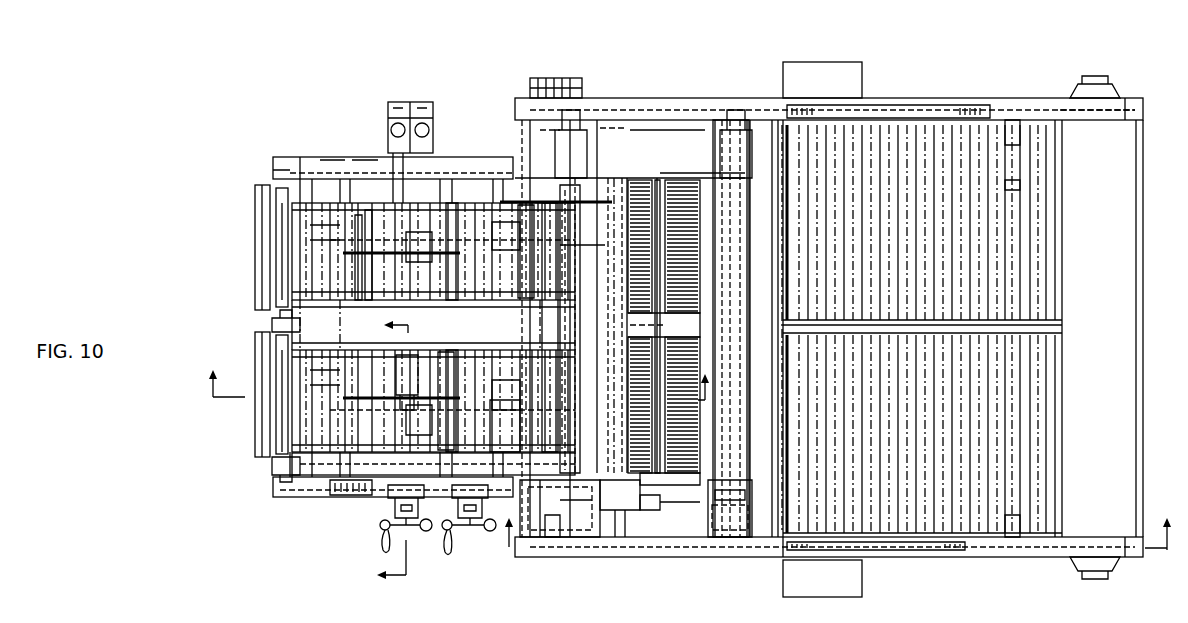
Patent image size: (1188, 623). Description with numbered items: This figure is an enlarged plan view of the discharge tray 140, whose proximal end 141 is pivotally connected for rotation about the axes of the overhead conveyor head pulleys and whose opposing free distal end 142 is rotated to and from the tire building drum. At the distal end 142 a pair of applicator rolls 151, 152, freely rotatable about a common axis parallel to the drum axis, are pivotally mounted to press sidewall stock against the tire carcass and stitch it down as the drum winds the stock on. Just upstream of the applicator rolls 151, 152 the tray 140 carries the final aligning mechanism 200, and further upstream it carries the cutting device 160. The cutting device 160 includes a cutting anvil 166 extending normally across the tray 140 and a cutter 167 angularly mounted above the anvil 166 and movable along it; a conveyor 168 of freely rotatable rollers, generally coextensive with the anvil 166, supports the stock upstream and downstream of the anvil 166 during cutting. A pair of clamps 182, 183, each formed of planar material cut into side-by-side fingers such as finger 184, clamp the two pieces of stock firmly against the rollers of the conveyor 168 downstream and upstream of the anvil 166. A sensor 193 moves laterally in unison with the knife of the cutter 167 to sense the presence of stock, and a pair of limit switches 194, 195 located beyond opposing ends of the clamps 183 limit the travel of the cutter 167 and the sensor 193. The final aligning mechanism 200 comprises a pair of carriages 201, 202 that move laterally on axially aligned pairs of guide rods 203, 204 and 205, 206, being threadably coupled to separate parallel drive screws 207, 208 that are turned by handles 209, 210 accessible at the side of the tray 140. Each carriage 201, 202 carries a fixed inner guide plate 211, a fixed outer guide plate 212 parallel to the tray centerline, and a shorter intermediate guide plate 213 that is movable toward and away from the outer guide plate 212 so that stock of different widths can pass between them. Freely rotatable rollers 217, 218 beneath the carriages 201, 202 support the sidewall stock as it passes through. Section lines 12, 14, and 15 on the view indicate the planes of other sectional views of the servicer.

The section line 12 is at (833, 522).
The section line 14 is at (460, 373).
The section line 15 is at (380, 451).
The discharge tray 140 is at (645, 97).
The proximal end 141 is at (1143, 551).
The free distal end 142 is at (290, 490).
The applicator roll 151 is at (255, 432).
The applicator roll 152 is at (254, 230).
The cutting device 160 is at (558, 547).
The cutting anvil 166 is at (667, 473).
The cutter 167 is at (666, 462).
The conveyor 168 is at (973, 540).
The clamp 182 is at (628, 178).
The clamp 183 is at (700, 197).
The finger 184 is at (670, 325).
The sensor 193 is at (720, 540).
The limit switch 194 is at (725, 540).
The limit switch 195 is at (722, 120).
The final aligning mechanism 200 is at (340, 502).
The carriage 201 is at (275, 470).
The carriage 202 is at (360, 280).
The guide rod 203 is at (270, 325).
The guide rod 204 is at (408, 372).
The guide rod 205 is at (366, 215).
The guide rod 206 is at (503, 450).
The drive screw 207 is at (387, 508).
The drive screw 208 is at (467, 530).
The handle 209 is at (372, 548).
The handle 210 is at (469, 548).
The inner guide plate 211 is at (540, 335).
The outer guide plate 212 is at (527, 207).
The intermediate guide plate 213 is at (450, 180).
The roller 217 is at (460, 453).
The roller 218 is at (498, 180).